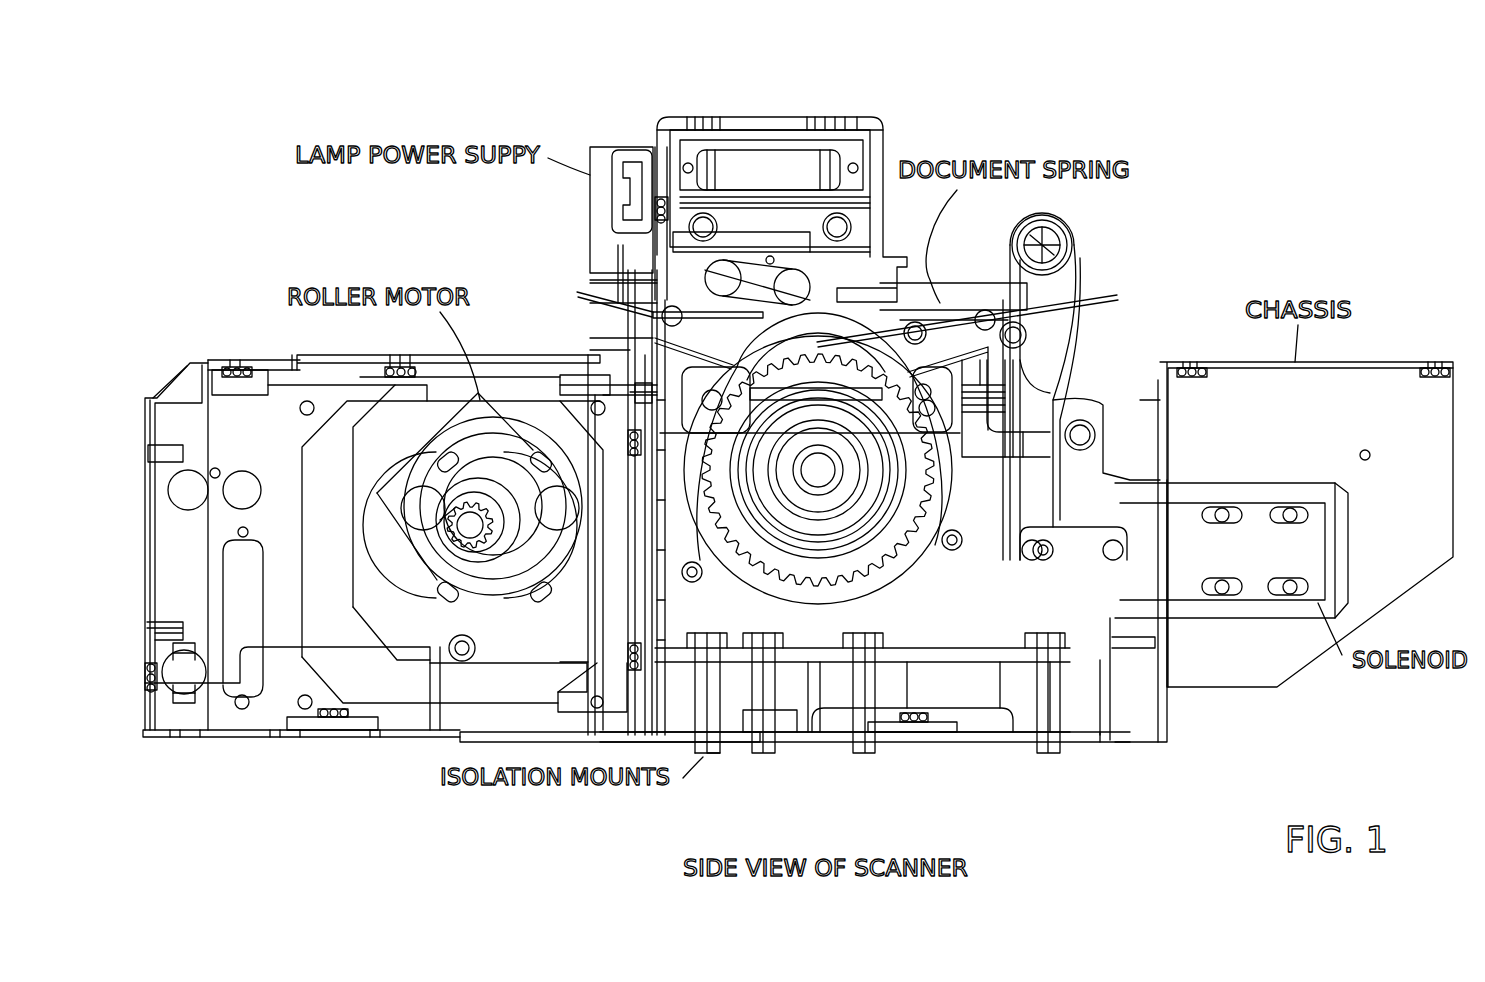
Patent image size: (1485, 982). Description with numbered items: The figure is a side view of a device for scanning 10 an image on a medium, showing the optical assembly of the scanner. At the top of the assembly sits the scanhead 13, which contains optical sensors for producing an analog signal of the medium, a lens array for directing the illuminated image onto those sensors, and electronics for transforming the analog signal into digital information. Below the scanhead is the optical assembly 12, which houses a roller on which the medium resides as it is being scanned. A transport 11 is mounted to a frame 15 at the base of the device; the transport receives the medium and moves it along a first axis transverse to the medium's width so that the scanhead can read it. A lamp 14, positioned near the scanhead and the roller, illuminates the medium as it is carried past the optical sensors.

The device for scanning 10 is at (815, 765).
The transport 11 is at (893, 578).
The optical assembly 12 is at (1078, 228).
The scanhead 13 is at (905, 82).
The lamp 14 is at (700, 283).
The frame 15 is at (922, 745).